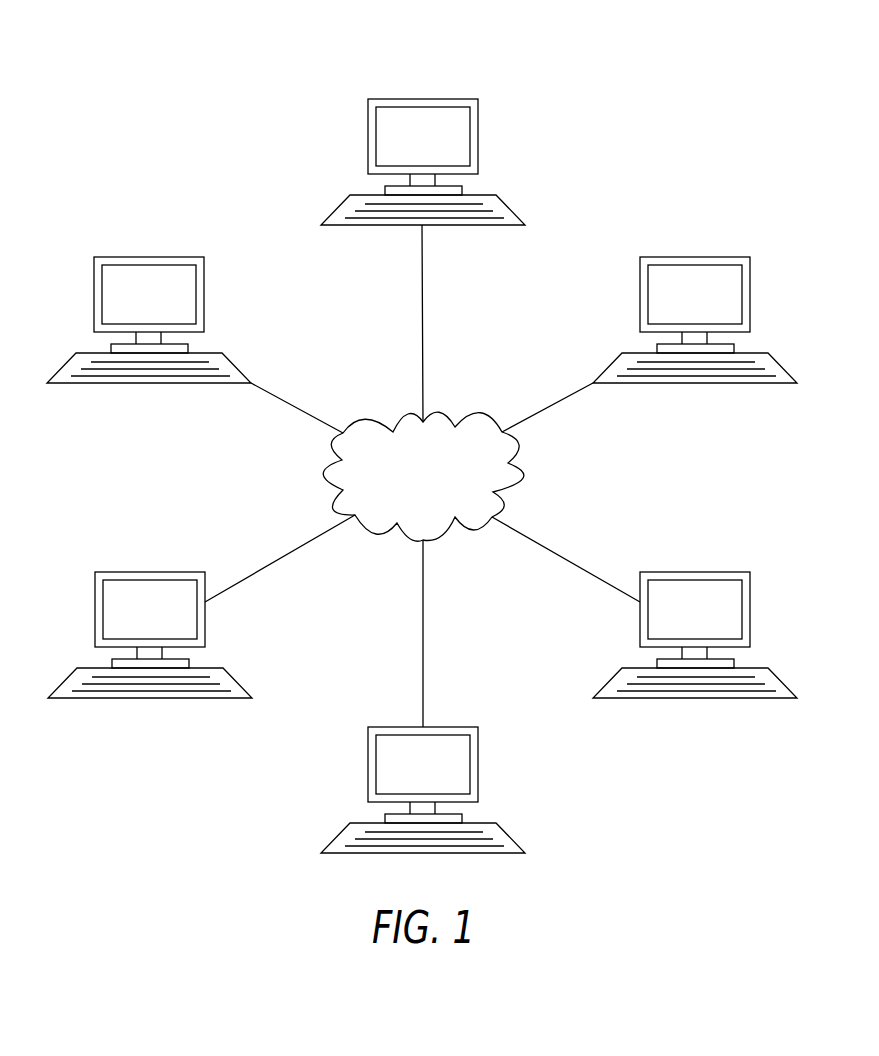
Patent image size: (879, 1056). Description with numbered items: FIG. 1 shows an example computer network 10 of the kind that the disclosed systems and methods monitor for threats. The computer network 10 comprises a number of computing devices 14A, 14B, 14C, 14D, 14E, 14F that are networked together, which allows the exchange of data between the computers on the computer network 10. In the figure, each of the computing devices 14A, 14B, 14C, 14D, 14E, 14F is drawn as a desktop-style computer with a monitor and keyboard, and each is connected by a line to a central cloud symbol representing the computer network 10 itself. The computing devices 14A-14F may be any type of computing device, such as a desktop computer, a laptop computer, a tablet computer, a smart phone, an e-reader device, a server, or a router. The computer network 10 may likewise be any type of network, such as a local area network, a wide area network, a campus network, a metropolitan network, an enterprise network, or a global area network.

The computer network 10 is at (387, 370).
The computing device 14A is at (425, 99).
The computing device 14B is at (150, 257).
The computing device 14C is at (150, 572).
The computing device 14D is at (453, 727).
The computing device 14E is at (696, 572).
The computing device 14F is at (696, 257).